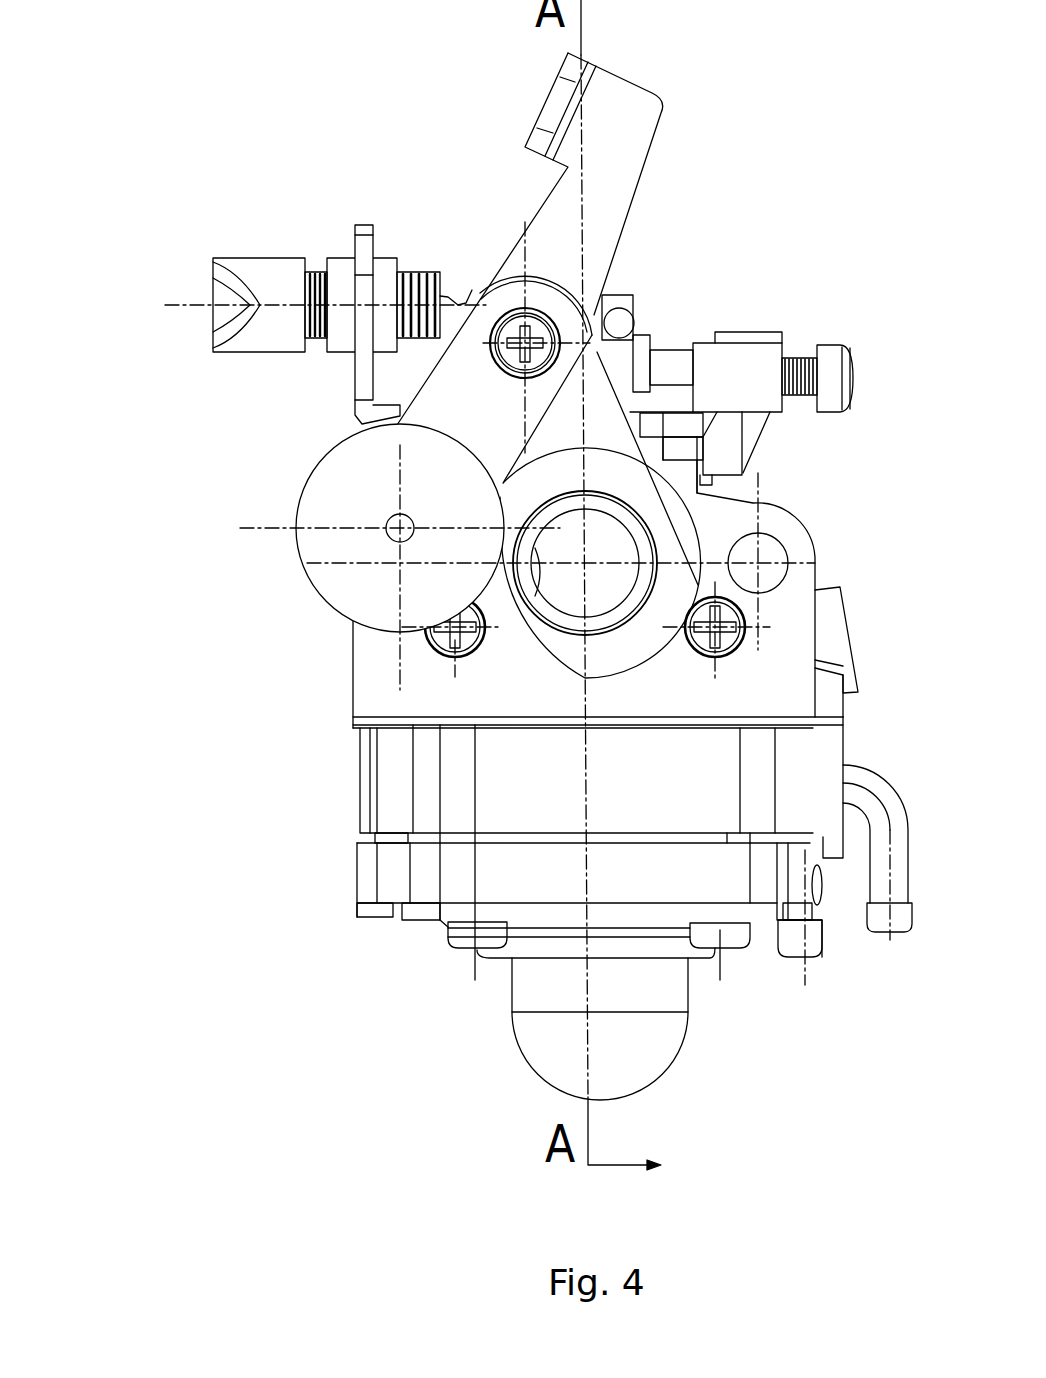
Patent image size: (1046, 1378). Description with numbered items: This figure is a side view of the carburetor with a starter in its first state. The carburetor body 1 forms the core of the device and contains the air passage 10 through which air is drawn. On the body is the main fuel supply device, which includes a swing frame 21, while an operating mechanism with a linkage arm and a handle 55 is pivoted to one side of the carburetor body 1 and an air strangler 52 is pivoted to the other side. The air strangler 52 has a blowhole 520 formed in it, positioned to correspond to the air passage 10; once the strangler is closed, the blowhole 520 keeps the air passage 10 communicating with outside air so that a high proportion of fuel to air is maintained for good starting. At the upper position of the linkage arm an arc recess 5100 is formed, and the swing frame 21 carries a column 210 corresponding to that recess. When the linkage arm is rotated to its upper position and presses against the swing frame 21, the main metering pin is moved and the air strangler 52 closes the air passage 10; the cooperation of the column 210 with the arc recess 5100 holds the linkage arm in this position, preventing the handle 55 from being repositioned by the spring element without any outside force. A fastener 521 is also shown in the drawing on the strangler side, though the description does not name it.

The carburetor body 1 is at (350, 704).
The air passage 10 is at (573, 547).
The swing frame 21 is at (657, 362).
The column 210 is at (632, 318).
The arc recess 5100 is at (623, 328).
The air strangler 52 is at (387, 452).
The blowhole 520 is at (397, 525).
The adjusting screw assembly 521 is at (490, 340).
The handle 55 is at (607, 136).